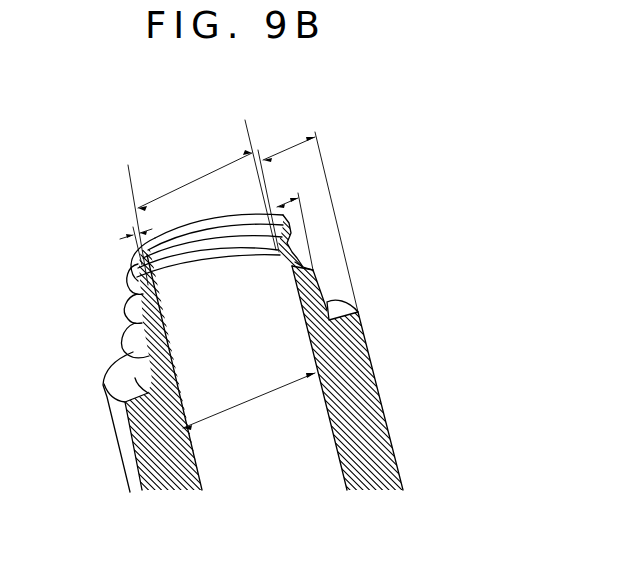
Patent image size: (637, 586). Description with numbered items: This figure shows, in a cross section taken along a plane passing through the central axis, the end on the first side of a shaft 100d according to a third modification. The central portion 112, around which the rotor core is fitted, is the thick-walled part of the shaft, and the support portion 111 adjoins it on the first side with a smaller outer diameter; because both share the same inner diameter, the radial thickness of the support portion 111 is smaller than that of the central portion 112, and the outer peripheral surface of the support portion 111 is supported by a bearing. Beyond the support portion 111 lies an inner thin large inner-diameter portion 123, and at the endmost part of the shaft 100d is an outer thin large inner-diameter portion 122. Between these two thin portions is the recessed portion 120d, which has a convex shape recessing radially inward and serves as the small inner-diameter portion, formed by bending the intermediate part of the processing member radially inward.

The shaft 100d is at (54, 157).
The recessed portion 120d is at (160, 302).
The outer thin large inner-diameter portion 122 is at (131, 281).
The inner thin large inner-diameter portion 123 is at (131, 311).
The support portion 111 is at (127, 341).
The central portion 112 is at (118, 438).